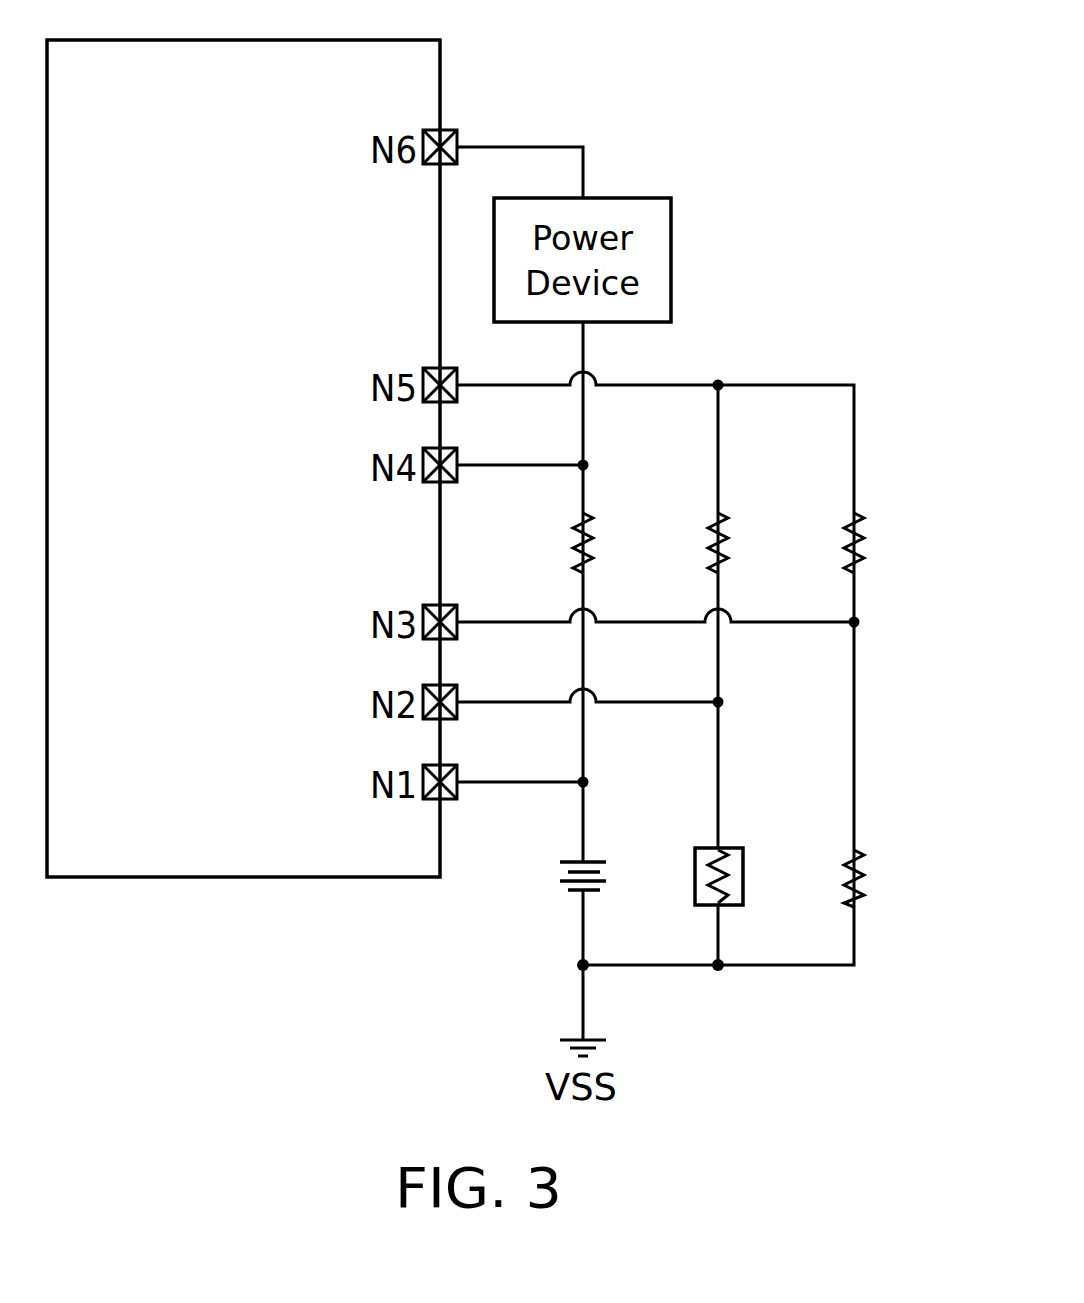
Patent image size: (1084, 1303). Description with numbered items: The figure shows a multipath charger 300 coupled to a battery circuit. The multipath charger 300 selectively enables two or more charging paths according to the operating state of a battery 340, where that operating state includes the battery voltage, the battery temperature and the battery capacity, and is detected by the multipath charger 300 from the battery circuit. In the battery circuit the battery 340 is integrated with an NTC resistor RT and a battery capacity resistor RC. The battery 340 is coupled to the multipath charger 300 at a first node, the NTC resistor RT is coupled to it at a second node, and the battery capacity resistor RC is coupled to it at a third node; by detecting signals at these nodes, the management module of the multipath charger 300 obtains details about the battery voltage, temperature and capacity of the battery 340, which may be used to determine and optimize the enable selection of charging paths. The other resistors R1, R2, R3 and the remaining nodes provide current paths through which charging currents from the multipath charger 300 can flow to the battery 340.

The multipath charger 300 is at (47, 40).
The battery 340 is at (596, 862).
The resistor R1 is at (600, 540).
The resistor R2 is at (736, 540).
The resistor R3 is at (872, 540).
The NTC resistor RT is at (745, 877).
The battery capacity resistor RC is at (872, 877).